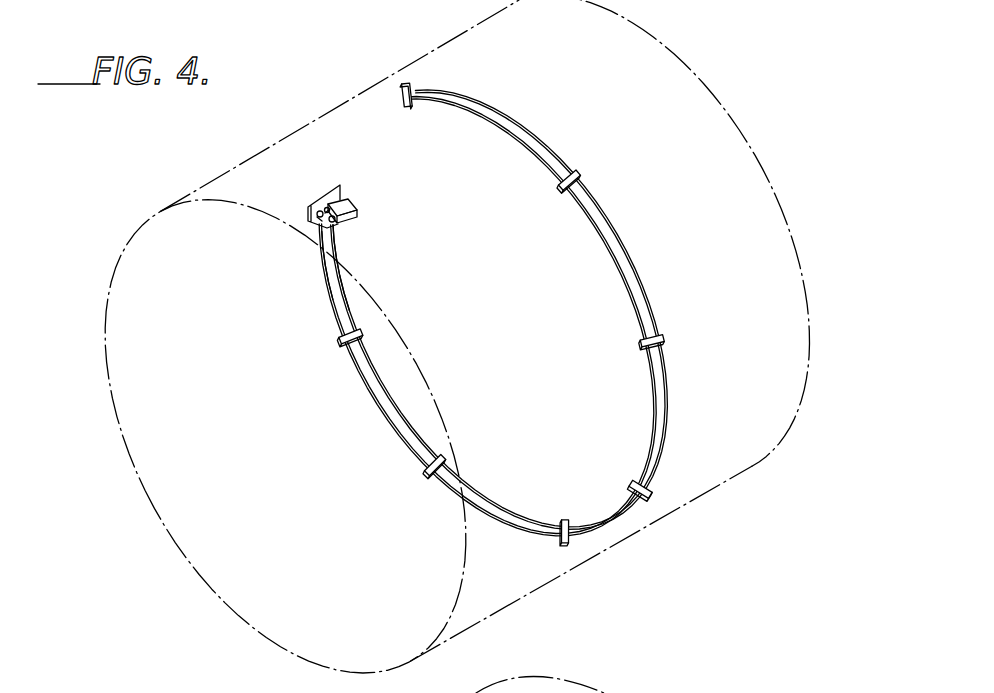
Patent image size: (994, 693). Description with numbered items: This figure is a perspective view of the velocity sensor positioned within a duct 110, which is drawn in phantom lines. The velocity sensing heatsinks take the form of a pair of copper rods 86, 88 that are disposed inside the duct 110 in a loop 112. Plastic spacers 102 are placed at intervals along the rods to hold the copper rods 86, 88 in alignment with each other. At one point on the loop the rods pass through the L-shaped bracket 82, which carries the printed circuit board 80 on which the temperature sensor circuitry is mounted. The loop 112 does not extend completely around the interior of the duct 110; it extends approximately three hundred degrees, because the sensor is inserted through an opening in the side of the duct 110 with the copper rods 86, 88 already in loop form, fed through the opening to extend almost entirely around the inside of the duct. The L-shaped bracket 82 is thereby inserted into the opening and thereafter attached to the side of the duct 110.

The duct 110 is at (690, 98).
The loop 112 is at (525, 122).
The plastic spacers 102 is at (341, 334).
The printed circuit board 80 is at (340, 195).
The L-shaped bracket 82 is at (352, 208).
The copper rod 86 is at (352, 307).
The copper rod 88 is at (331, 296).